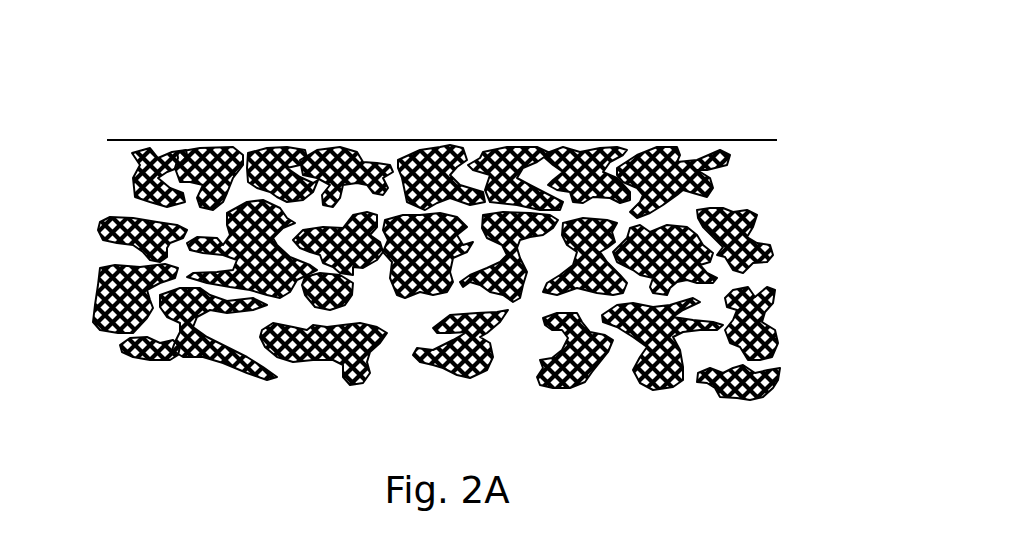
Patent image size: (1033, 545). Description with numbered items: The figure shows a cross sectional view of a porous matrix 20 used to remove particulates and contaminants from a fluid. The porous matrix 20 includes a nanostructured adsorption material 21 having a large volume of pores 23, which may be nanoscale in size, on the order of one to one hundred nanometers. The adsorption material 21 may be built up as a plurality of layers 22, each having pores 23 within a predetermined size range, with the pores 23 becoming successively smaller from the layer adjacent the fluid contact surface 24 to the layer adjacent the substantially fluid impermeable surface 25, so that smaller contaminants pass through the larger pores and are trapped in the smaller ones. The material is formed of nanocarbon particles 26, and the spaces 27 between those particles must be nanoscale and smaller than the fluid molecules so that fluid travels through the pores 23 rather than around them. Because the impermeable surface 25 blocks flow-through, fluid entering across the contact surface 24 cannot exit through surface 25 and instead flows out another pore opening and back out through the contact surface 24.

The porous matrix 20 is at (727, 80).
The nanostructured adsorption material 21 is at (543, 385).
The layers 22 is at (822, 140).
The pores 23 is at (102, 255).
The fluid contact surface 24 is at (260, 380).
The substantially fluid impermeable surface 25 is at (278, 140).
The nanocarbon particles 26 is at (134, 360).
The spaces 27 is at (152, 362).